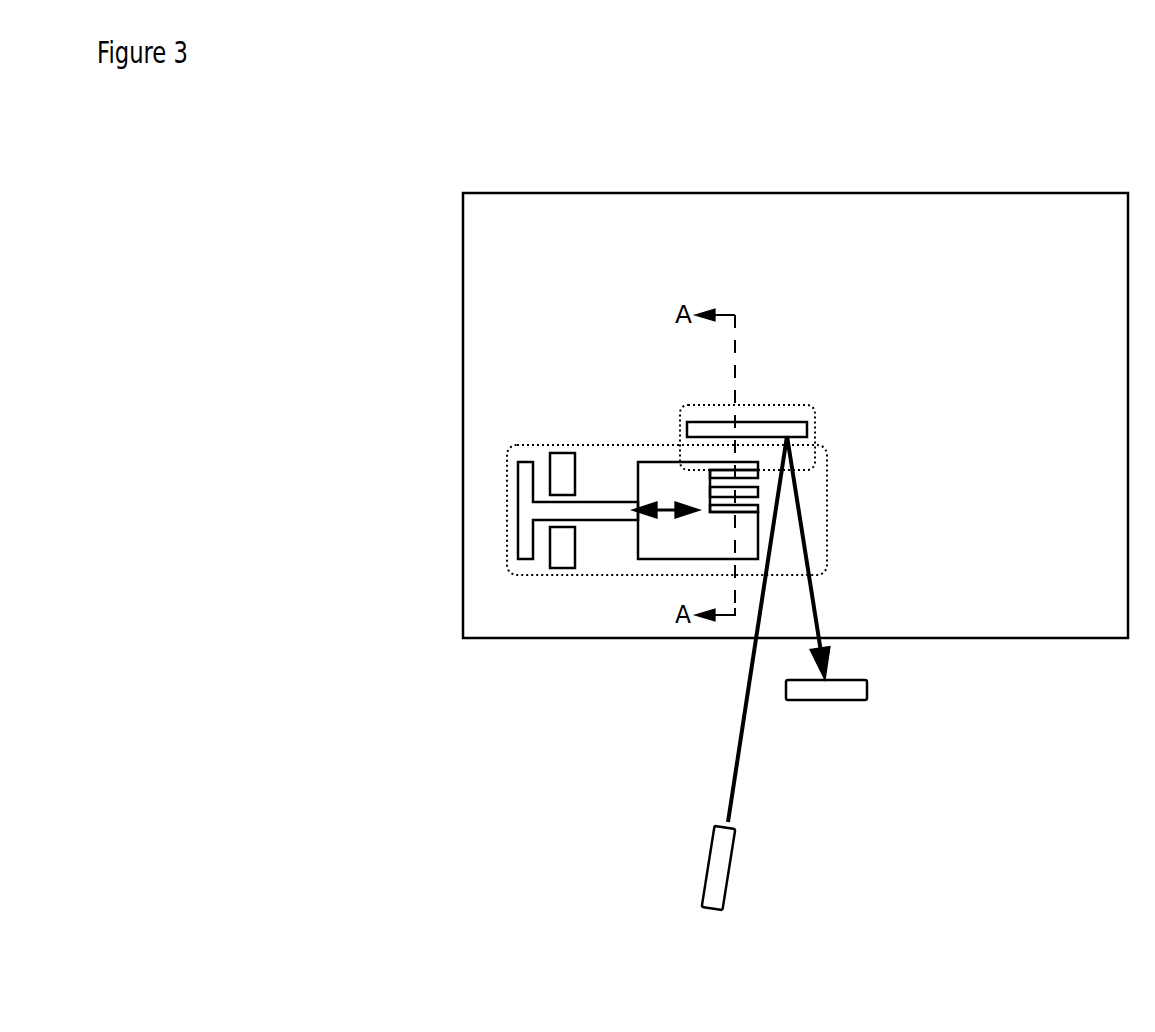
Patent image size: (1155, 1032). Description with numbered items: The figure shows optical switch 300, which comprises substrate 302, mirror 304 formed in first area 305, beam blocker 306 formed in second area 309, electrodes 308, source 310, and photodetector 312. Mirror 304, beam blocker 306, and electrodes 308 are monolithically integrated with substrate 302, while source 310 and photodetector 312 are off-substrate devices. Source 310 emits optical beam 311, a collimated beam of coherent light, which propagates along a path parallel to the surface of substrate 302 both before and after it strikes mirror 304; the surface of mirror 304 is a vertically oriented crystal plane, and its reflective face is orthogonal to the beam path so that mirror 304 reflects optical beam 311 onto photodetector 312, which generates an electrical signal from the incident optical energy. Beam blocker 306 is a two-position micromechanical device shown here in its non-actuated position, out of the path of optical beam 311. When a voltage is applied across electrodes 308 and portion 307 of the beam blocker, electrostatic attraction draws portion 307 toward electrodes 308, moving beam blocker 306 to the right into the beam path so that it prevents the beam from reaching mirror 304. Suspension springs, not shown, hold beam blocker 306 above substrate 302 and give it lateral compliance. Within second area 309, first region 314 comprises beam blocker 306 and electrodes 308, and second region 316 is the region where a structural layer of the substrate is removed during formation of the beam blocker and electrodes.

The optical switch 300 is at (376, 191).
The substrate 302 is at (795, 415).
The mirror 304 is at (787, 364).
The first area 305 is at (779, 409).
The beam blocker 306 is at (669, 471).
The portion of the beam blocker 307 is at (519, 471).
The electrodes 308 is at (533, 503).
The second area 309 is at (715, 510).
The source 310 is at (794, 872).
The optical beam 311 is at (670, 629).
The photodetector 312 is at (931, 717).
The first region 314 is at (567, 487).
The second region 316 is at (547, 439).